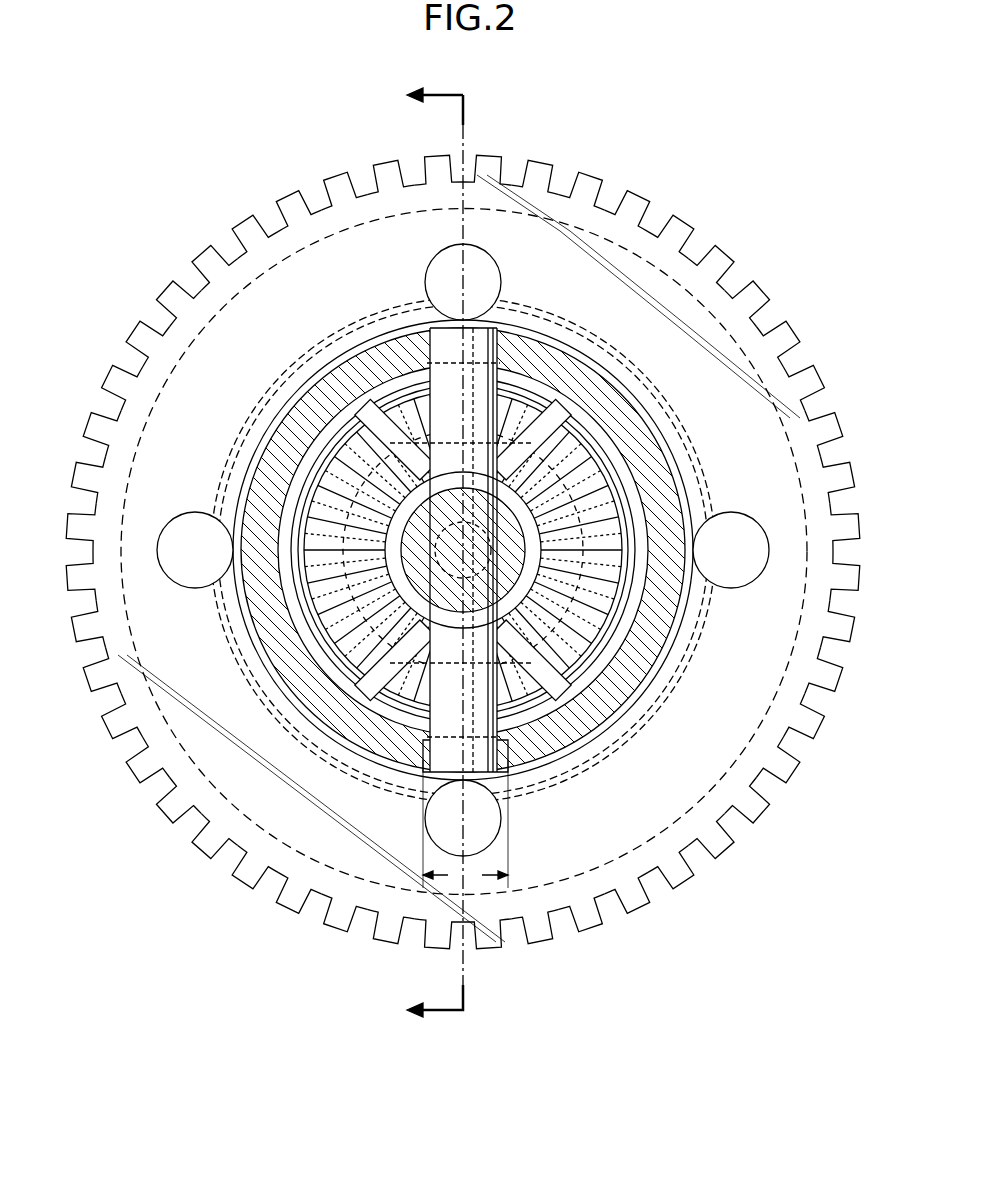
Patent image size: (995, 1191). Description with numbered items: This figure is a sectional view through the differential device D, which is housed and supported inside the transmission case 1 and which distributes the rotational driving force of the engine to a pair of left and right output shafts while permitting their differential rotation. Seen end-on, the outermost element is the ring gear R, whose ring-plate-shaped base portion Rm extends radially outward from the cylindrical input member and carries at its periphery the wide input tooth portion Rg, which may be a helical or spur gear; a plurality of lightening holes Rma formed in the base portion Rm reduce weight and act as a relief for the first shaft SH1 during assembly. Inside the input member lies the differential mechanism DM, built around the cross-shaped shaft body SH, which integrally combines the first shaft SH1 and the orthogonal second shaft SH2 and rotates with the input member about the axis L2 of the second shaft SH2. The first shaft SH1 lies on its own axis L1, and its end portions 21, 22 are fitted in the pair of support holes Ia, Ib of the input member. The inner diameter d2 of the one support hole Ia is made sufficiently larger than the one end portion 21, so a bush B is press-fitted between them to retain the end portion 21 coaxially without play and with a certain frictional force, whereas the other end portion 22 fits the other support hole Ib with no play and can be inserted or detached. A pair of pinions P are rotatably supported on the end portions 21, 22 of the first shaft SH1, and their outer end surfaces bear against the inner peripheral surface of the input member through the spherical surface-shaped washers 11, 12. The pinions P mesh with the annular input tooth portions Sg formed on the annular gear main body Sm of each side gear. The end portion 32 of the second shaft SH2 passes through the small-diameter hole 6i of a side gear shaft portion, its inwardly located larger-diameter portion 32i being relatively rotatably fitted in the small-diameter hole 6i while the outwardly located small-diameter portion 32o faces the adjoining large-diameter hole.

The ring gear R is at (462, 545).
The input tooth portion Rg is at (638, 196).
The base portion Rm is at (722, 322).
The lightening holes Rma is at (456, 249).
The spherical surface-shaped washer 12 is at (366, 777).
The gear main body Sm is at (318, 397).
The differential mechanism DM is at (598, 382).
The spherical surface-shaped washer 11 is at (523, 377).
The end portion of the second shaft 32 is at (527, 546).
The small-diameter portion 32o is at (595, 412).
The larger-diameter portion 32i is at (612, 477).
The input tooth portion Sg is at (292, 505).
The cross-shaped shaft body SH is at (540, 636).
The first shaft SH1 is at (560, 695).
The second shaft SH2 is at (608, 658).
The pinion P is at (550, 393).
The small-diameter hole 6i is at (436, 512).
The other end portion of the first shaft 22 is at (444, 340).
The one end portion of the first shaft 21 is at (447, 762).
The one support hole Ia is at (510, 768).
The other support hole Ib is at (490, 340).
The bush B is at (420, 758).
The axis of the first shaft L1 is at (400, 342).
The axis of the second shaft L2 is at (450, 767).
The inner diameter of the one support hole d2 is at (465, 824).
The transmission case 1 is at (448, 552).
The differential device D is at (245, 905).